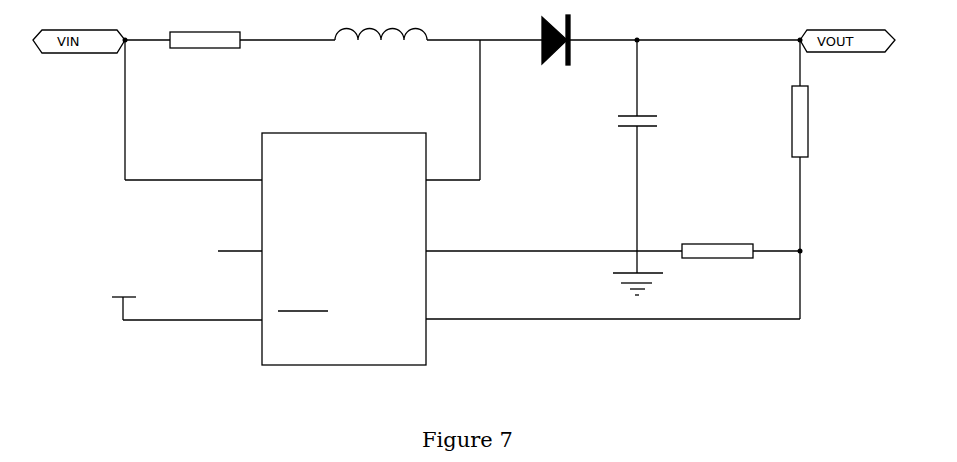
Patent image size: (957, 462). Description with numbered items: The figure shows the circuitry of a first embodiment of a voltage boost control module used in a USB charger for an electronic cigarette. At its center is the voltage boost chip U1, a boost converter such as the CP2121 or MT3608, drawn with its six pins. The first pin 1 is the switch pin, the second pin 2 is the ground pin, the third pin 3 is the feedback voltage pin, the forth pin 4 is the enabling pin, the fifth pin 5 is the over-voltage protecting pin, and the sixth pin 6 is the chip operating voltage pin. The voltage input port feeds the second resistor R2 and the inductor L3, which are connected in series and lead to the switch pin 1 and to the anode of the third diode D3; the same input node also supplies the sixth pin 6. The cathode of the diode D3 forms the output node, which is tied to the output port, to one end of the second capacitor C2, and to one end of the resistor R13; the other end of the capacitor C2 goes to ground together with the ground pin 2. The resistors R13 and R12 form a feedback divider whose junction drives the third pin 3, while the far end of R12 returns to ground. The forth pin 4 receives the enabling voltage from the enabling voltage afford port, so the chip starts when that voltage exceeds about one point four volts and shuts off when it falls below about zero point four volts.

The second resistor R2 is at (205, 24).
The second inductor L3 is at (380, 25).
The third diode D3 is at (543, 32).
The voltage boost chip U1 is at (337, 228).
The second capacitor C2 is at (655, 128).
The resistor R12 is at (717, 241).
The resistor R13 is at (815, 121).
The first pin 1 is at (453, 172).
The second pin 2 is at (554, 243).
The third pin 3 is at (613, 311).
The forth pin 4 is at (180, 300).
The fifth pin 5 is at (240, 243).
The sixth pin 6 is at (193, 172).